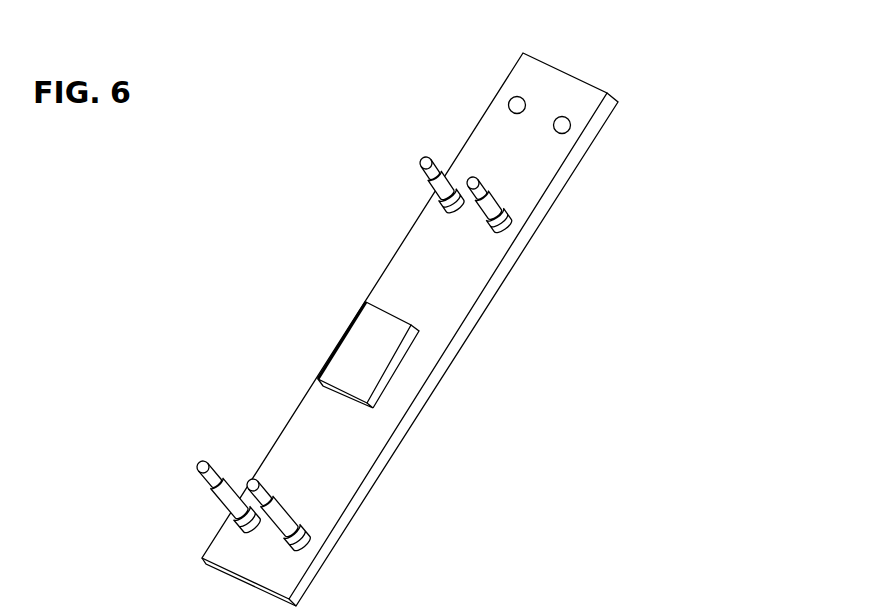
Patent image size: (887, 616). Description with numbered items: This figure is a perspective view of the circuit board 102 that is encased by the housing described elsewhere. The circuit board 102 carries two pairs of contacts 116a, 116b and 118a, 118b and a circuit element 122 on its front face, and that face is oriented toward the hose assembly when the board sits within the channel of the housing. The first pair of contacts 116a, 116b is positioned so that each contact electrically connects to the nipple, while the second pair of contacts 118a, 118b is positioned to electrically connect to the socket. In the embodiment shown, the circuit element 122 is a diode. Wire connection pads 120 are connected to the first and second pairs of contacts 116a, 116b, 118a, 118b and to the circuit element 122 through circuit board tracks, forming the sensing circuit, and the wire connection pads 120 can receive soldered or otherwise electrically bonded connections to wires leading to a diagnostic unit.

The circuit board 102 is at (660, 105).
The first pair of contacts 116a is at (203, 463).
The first pair of contacts 116b is at (287, 523).
The second pair of contacts 118a is at (425, 162).
The second pair of contacts 118b is at (497, 212).
The wire connection pads 120 is at (517, 103).
The circuit element 122 is at (358, 348).